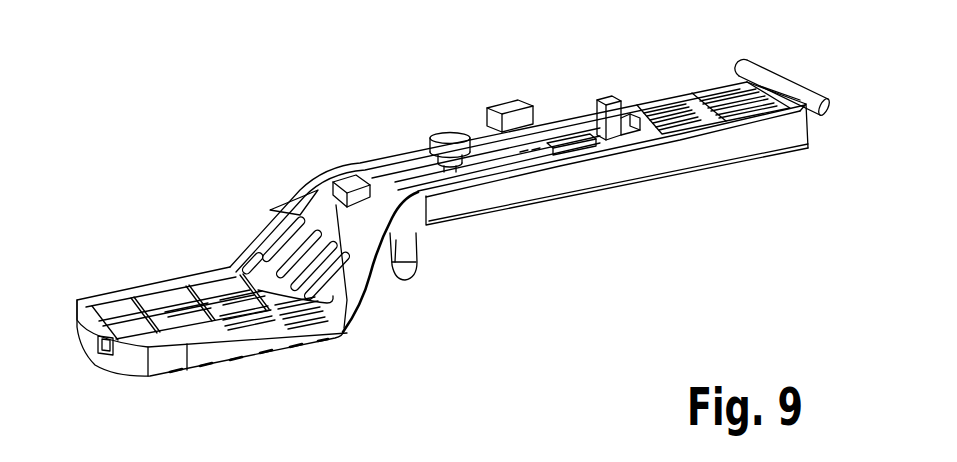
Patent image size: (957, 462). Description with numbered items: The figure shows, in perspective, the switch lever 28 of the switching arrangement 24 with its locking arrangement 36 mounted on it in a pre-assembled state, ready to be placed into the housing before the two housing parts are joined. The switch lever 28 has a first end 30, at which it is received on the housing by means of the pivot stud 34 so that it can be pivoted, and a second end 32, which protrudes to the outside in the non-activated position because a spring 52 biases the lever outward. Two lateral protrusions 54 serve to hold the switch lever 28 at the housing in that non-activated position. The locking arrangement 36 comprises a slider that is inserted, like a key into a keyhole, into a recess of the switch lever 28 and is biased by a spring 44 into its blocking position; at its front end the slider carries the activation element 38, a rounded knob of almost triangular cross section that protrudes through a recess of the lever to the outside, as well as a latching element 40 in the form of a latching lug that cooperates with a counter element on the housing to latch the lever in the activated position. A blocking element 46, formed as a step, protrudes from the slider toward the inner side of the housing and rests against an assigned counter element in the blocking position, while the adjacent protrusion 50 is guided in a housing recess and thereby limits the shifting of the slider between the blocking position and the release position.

The switching arrangement 24 is at (306, 158).
The switch lever 28 is at (503, 190).
The first end 30 is at (792, 135).
The second end 32 is at (160, 363).
The pivot stud 34 is at (823, 110).
The locking arrangement 36 is at (398, 160).
The activation element 38 is at (405, 273).
The latching element 40 is at (338, 245).
The spring 44 is at (543, 160).
The blocking element 46 is at (627, 110).
The protrusion 50 is at (607, 97).
The spring 52 is at (447, 130).
The lateral protrusions 54 is at (508, 100).